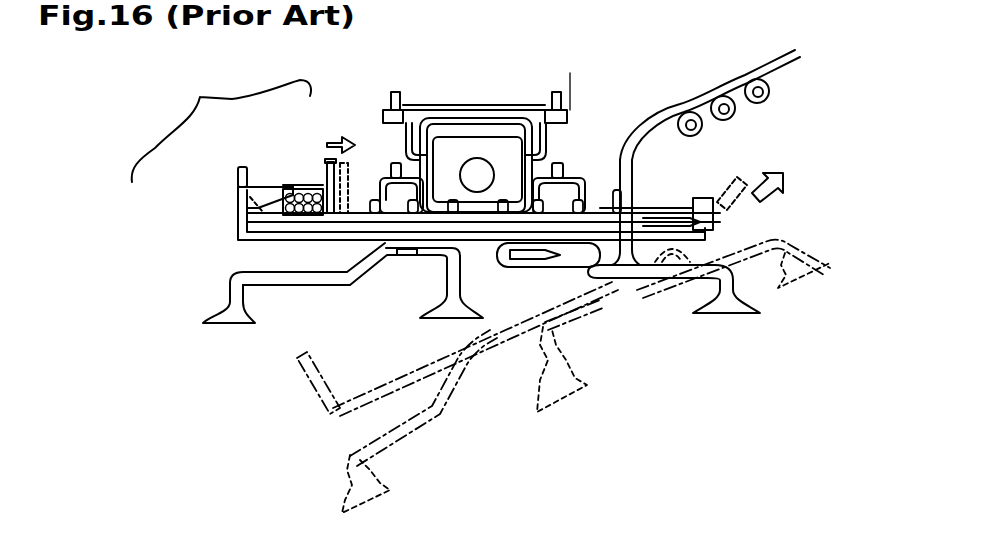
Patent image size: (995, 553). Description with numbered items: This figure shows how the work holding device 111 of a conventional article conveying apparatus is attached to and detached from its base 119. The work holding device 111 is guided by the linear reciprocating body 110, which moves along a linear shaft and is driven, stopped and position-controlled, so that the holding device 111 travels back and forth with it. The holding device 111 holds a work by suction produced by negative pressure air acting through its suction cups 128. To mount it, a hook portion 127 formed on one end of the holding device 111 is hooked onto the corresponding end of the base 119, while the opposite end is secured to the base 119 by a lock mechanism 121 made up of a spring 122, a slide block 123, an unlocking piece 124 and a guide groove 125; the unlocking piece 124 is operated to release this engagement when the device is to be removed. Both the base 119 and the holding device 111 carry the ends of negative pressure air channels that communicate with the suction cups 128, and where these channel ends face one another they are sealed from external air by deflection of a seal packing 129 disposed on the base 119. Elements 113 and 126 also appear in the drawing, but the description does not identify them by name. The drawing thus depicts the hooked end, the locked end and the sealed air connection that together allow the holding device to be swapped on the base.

The linear reciprocating body 110 is at (532, 145).
The work holding device 111 is at (243, 238).
The central body with mounting plate 113 is at (417, 155).
The base 119 is at (357, 213).
The lock mechanism 121 is at (221, 125).
The spring 122 is at (297, 185).
The slide block 123 is at (243, 193).
The unlocking piece 124 is at (327, 180).
The guide groove 125 is at (292, 185).
The tray 126 is at (238, 208).
The hook portion 127 is at (694, 208).
The suction cups 128 is at (226, 324).
The seal packing 129 is at (660, 207).